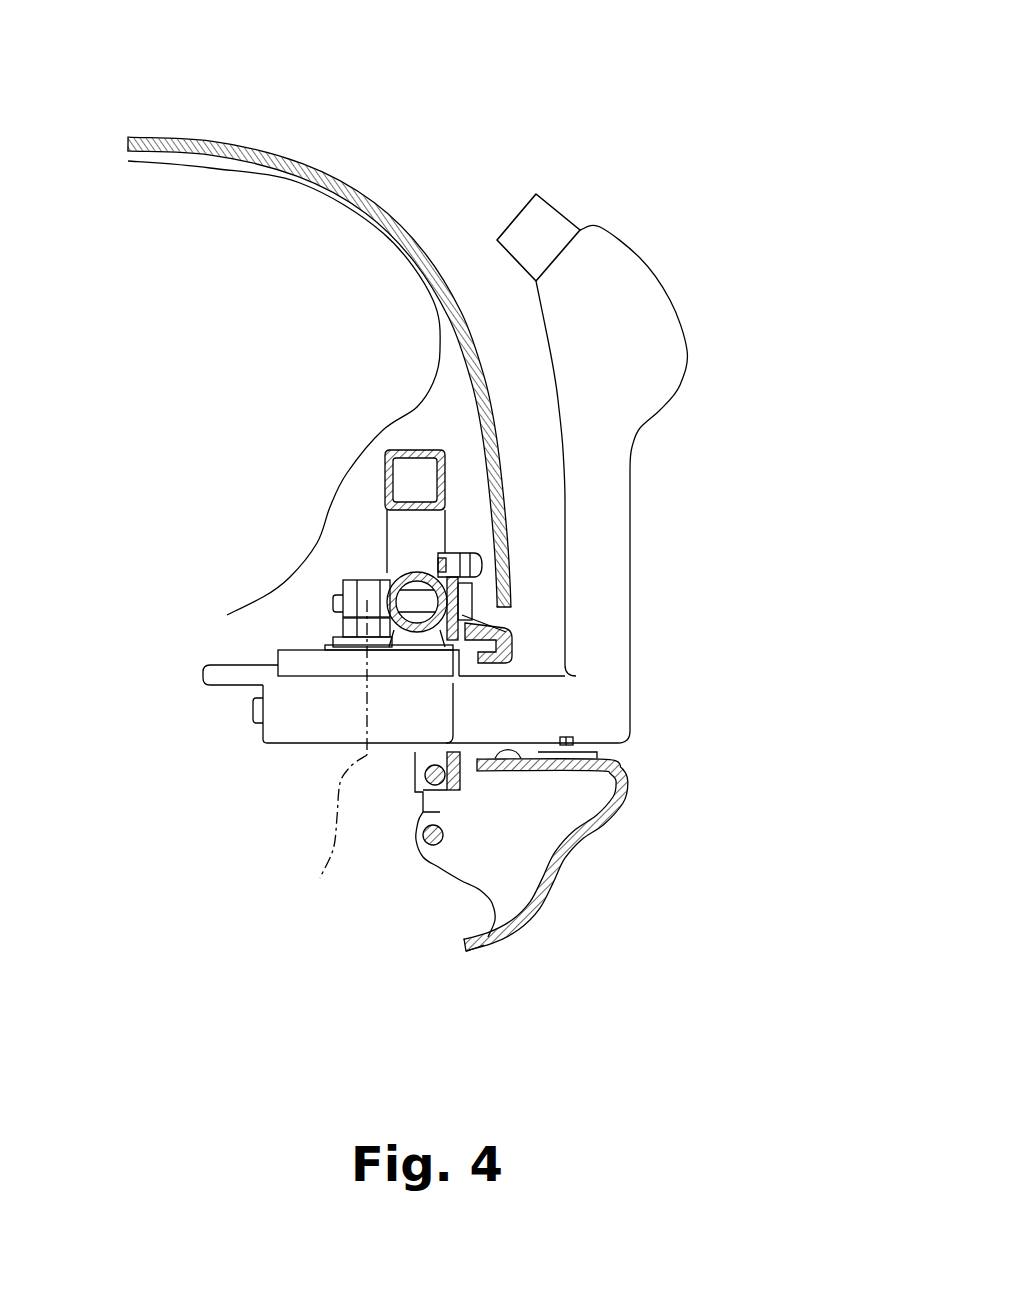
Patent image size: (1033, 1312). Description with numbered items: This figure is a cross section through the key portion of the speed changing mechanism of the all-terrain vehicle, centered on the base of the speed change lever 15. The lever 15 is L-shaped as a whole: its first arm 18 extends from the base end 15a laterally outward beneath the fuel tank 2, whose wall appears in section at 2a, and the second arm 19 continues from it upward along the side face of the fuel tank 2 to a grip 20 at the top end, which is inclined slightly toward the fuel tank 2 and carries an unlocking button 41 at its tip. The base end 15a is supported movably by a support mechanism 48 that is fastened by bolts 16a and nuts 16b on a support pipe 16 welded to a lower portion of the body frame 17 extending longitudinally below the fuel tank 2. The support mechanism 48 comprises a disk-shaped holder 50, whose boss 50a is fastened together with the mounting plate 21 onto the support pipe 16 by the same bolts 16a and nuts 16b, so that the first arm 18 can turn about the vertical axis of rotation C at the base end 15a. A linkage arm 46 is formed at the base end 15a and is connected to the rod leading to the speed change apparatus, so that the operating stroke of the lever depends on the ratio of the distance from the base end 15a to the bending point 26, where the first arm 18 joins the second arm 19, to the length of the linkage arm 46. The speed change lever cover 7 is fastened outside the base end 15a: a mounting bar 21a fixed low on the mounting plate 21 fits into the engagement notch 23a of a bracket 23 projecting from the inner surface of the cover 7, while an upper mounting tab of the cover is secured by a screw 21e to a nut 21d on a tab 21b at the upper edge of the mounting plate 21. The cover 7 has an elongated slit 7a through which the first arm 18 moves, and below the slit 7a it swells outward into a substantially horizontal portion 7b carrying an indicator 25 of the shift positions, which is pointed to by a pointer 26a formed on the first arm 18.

The fuel tank 2 is at (195, 213).
The panel wall section 2a is at (340, 180).
The unlocking button 41 is at (545, 220).
The grip 20 is at (638, 307).
The second arm 19 is at (615, 575).
The speed change lever 15 is at (702, 692).
The base end 15a is at (287, 710).
The linkage arm 46 is at (218, 677).
The holder 50 is at (290, 658).
The boss 50a is at (370, 578).
The support mechanism 48 is at (297, 629).
The body frame 17 is at (392, 450).
The support pipe 16 is at (400, 577).
The bolts 16a is at (470, 607).
The nuts 16b is at (343, 583).
The speed change lever cover 7 is at (563, 880).
The elongated slit 7a is at (500, 670).
The horizontal portion 7b is at (523, 752).
The first arm 18 is at (640, 747).
The mounting plate 21 is at (460, 777).
The mounting bar 21a is at (463, 550).
The tab 21b is at (458, 548).
The nut 21d is at (448, 548).
The screw 21e is at (483, 563).
The bracket 23 is at (463, 860).
The engagement notch 23a is at (427, 847).
The indicator 25 is at (647, 770).
The bending point 26 is at (507, 712).
The pointer 26a is at (563, 750).
The vertical axis of rotation C is at (330, 837).